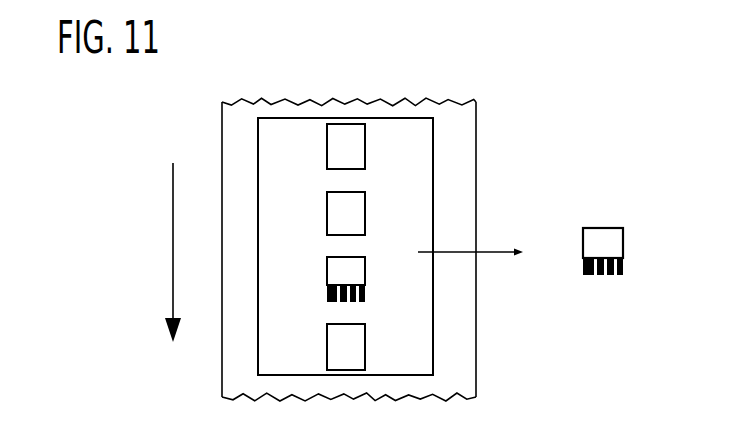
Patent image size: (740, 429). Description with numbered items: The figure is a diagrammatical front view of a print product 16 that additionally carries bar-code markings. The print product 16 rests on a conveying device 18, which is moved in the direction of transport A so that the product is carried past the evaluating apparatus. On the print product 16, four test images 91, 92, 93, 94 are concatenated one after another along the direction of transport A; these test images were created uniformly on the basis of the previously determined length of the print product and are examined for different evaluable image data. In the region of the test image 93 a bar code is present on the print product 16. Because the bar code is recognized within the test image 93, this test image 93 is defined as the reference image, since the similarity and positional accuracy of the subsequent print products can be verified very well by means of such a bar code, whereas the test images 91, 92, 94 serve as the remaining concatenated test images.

The conveying device 18 is at (242, 118).
The print product 16 is at (408, 128).
The test image 91 is at (346, 146).
The test image 92 is at (346, 213).
The test image 93 is at (475, 263).
The test image 94 is at (346, 347).
The direction of transport A is at (173, 240).